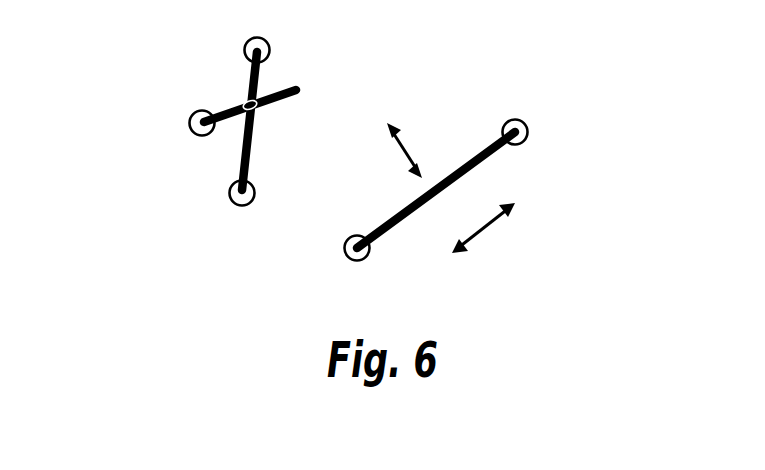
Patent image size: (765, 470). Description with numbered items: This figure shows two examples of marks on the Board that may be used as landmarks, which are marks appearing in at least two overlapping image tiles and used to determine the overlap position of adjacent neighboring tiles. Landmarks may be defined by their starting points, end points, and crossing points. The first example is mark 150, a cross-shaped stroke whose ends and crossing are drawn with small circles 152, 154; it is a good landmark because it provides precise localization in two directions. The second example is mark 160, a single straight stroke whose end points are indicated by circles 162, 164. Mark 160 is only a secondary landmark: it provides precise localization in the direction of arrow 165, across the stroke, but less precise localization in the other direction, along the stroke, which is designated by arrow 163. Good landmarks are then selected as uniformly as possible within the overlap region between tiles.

The mark 150 is at (297, 88).
The marker end circle 152 is at (253, 39).
The marker end circles 154 is at (242, 117).
The mark 160 is at (462, 162).
The bar end circle 162 is at (346, 253).
The bar end circle 164 is at (528, 143).
The arrow 165 is at (404, 156).
The arrow 163 is at (487, 236).